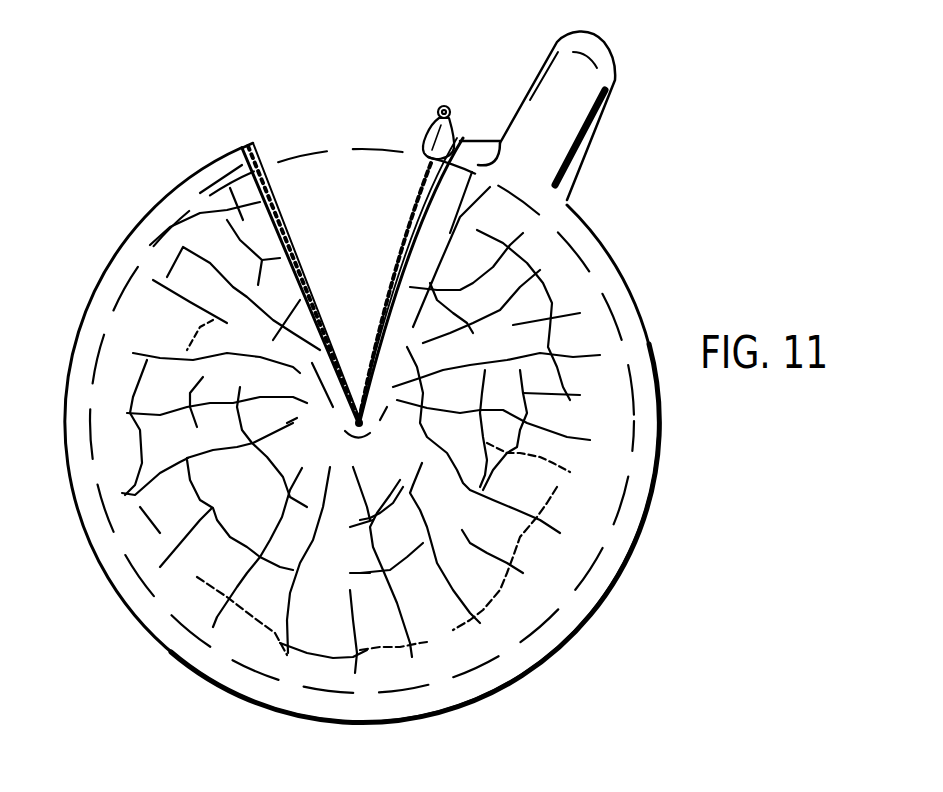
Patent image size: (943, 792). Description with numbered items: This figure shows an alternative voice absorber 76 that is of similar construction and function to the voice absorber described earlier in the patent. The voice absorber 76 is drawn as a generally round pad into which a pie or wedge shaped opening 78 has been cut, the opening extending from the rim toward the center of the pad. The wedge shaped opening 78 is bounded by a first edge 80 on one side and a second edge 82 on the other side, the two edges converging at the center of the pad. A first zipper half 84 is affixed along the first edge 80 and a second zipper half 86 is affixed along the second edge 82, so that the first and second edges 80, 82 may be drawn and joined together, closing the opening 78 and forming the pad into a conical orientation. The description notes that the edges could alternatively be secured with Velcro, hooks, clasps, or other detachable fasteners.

The voice absorber 76 is at (124, 166).
The pie or wedge shaped opening 78 is at (343, 173).
The first edge 80 is at (262, 172).
The second edge 82 is at (430, 204).
The first zipper half 84 is at (290, 228).
The second zipper half 86 is at (390, 274).